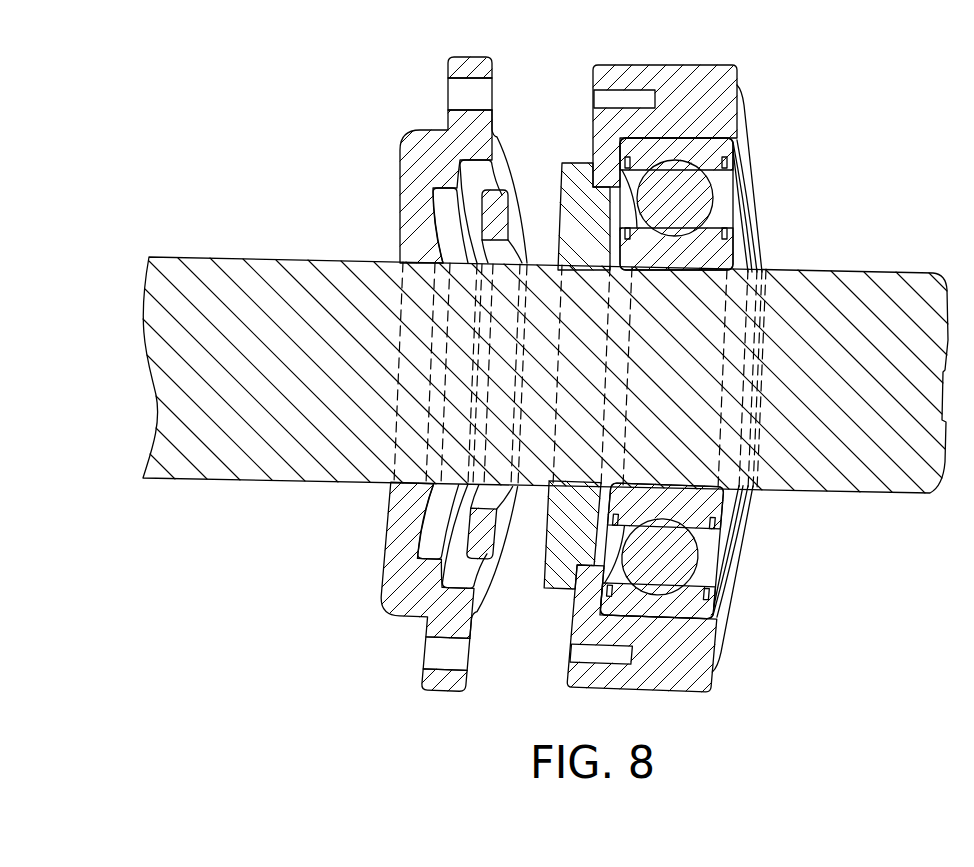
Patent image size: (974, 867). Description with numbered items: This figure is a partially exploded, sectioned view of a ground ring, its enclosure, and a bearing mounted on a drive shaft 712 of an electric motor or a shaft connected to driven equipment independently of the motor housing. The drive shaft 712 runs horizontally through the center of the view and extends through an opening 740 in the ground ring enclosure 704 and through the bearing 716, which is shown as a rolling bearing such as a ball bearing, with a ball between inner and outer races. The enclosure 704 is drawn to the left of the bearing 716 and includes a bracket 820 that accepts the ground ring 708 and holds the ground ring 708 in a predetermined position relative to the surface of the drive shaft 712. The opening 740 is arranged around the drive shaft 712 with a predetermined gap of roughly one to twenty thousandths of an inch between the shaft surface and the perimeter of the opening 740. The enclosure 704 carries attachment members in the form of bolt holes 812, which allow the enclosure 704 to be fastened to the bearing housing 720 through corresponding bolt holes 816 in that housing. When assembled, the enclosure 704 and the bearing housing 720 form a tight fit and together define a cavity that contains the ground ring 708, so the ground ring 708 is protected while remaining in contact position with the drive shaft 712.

The ground ring enclosure 704 is at (403, 187).
The ground ring 708 is at (470, 533).
The drive shaft 712 is at (340, 257).
The bearing 716 is at (772, 195).
The bearing housing 720 is at (737, 88).
The opening 740 is at (393, 362).
The bolt holes 812 is at (450, 97).
The bolt holes 816 is at (594, 100).
The bracket 820 is at (432, 510).